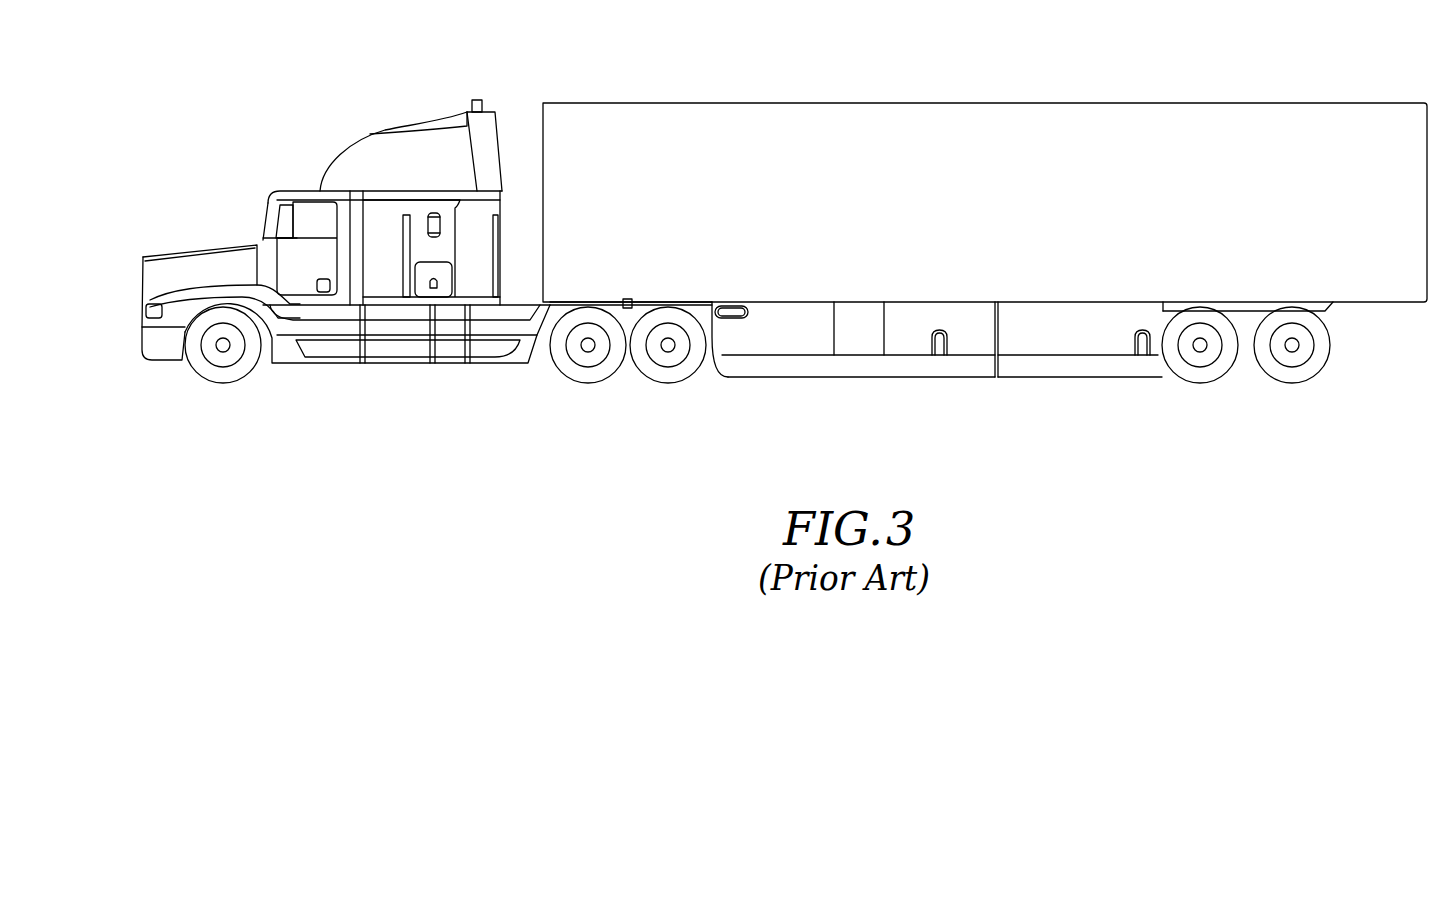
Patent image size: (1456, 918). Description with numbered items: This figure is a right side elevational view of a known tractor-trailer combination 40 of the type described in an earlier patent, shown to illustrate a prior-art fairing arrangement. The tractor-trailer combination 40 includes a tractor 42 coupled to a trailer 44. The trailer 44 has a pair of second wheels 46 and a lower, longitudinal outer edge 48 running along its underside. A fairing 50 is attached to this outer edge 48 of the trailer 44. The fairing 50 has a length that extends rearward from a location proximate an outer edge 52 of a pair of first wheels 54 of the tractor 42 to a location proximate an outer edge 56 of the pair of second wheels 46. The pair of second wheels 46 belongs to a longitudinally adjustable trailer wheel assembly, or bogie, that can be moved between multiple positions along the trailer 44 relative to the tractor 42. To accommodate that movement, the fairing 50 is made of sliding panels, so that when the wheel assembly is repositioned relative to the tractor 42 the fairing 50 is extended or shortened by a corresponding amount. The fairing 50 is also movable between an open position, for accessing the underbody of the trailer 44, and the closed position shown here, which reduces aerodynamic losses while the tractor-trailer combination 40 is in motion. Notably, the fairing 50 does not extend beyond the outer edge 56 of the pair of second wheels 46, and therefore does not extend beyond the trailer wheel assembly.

The tractor-trailer combination 40 is at (530, 90).
The tractor 42 is at (261, 190).
The trailer 44 is at (986, 90).
The pair of second wheels 46 is at (1322, 398).
The lower, longitudinal outer edge 48 is at (800, 300).
The fairing 50 is at (1048, 380).
The outer edge 52 is at (698, 368).
The pair of first wheels 54 is at (708, 398).
The outer edge 56 is at (1175, 373).